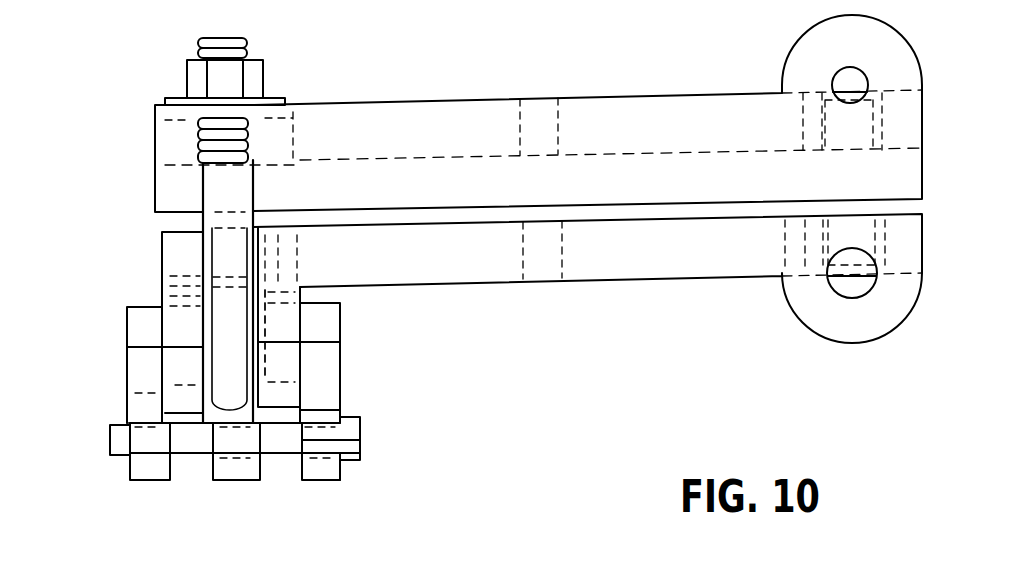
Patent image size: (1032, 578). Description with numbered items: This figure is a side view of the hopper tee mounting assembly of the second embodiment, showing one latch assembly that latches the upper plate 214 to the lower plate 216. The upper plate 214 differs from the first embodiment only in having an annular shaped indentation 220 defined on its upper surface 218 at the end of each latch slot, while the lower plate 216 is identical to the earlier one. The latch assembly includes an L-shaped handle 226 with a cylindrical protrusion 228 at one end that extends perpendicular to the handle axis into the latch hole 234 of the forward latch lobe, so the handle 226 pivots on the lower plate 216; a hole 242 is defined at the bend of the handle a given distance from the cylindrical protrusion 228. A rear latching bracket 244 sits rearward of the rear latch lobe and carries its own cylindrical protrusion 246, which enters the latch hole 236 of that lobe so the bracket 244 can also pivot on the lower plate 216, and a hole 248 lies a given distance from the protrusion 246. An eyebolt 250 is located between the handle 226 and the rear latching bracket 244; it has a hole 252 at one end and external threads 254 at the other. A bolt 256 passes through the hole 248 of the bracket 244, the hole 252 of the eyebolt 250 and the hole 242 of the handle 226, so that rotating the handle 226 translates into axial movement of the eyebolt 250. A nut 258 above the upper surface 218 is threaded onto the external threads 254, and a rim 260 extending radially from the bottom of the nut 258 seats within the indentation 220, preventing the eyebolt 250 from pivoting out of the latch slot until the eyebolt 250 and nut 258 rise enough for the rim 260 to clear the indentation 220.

The upper plate 214 is at (608, 97).
The lower plate 216 is at (632, 280).
The upper surface 218 is at (337, 103).
The annular shaped indentation 220 is at (183, 120).
The L-shaped handle 226 is at (123, 378).
The cylindrical protrusion 228 is at (182, 366).
The latch hole 234 is at (182, 340).
The latch hole 236 is at (285, 338).
The hole 242 is at (157, 450).
The rear latching bracket 244 is at (340, 368).
The cylindrical protrusion 246 is at (277, 370).
The hole 248 is at (328, 458).
The eyebolt 250 is at (218, 190).
The hole 252 is at (242, 457).
The external threads 254 is at (292, 122).
The bolt 256 is at (280, 443).
The nut 258 is at (188, 83).
The rim 260 is at (172, 93).